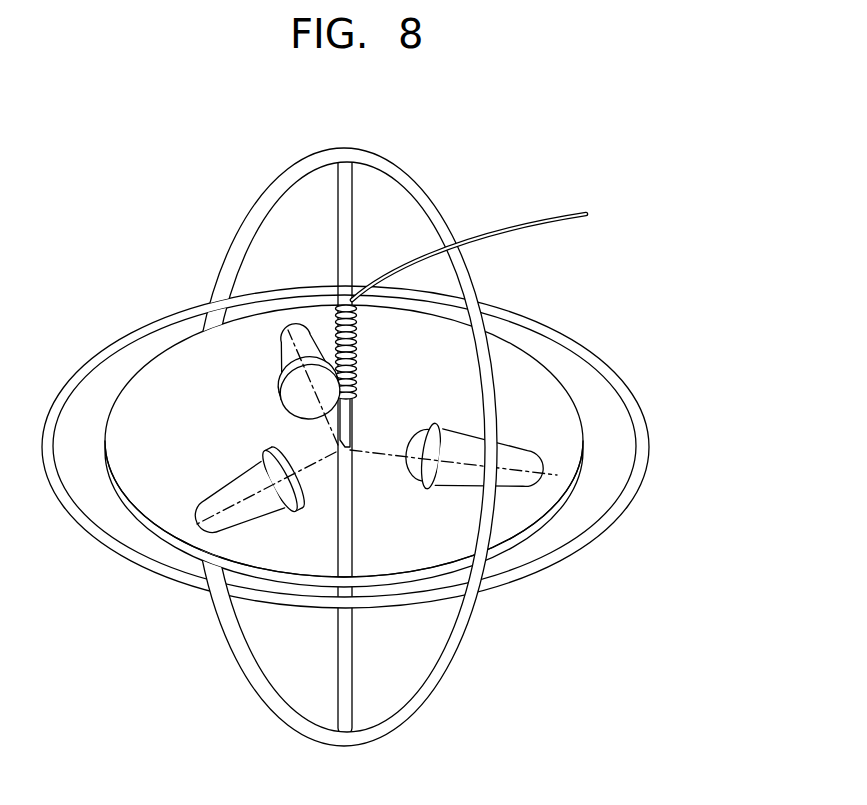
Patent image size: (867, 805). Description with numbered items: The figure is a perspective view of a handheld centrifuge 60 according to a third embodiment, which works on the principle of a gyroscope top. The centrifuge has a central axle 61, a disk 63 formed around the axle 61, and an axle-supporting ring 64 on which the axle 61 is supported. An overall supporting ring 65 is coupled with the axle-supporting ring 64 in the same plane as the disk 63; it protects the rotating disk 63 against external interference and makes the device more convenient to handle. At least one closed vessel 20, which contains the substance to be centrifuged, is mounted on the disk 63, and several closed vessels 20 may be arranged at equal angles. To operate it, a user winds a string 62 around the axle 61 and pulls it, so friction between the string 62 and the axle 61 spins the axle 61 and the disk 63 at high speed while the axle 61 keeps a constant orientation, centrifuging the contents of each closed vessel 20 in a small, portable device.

The handheld centrifuge 60 is at (668, 381).
The axle 61 is at (345, 667).
The string 62 is at (333, 323).
The disk 63 is at (517, 388).
The axle-supporting ring 64 is at (448, 668).
The overall supporting ring 65 is at (547, 570).
The closed vessel 20 is at (233, 488).